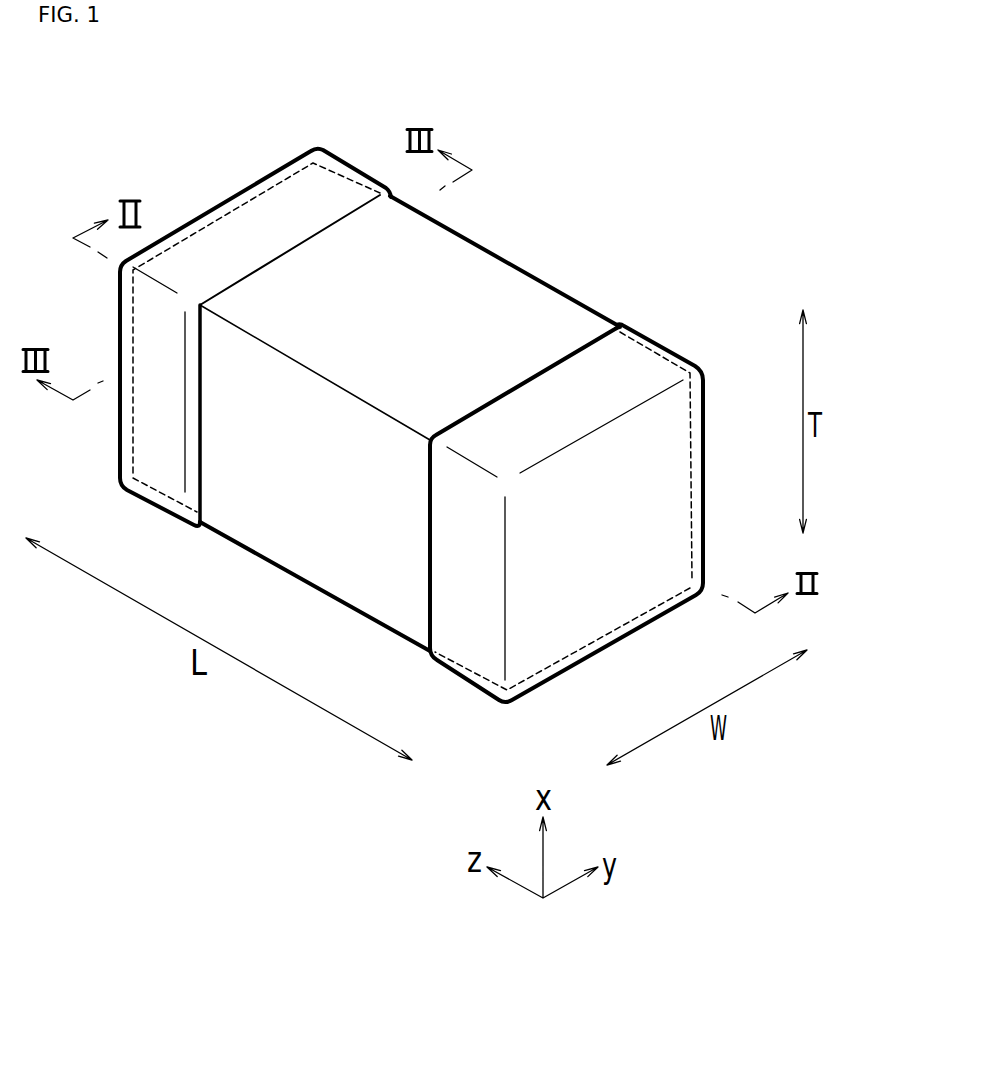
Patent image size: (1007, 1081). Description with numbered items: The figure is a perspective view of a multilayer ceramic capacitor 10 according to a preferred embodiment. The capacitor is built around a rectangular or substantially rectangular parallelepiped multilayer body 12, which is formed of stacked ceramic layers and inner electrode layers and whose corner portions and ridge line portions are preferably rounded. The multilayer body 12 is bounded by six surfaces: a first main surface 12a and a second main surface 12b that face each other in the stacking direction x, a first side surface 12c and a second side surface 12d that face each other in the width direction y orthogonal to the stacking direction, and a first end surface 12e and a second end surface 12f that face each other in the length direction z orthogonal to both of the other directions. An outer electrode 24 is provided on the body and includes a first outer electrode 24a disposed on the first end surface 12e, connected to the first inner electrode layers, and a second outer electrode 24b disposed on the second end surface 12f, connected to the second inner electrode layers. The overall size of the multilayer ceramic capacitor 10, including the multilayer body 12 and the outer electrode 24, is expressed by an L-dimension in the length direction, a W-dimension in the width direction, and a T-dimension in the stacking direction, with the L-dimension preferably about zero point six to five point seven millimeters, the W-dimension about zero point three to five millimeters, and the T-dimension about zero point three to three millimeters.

The multilayer ceramic capacitor 10 is at (78, 119).
The multilayer body 12 is at (582, 308).
The first main surface 12a is at (528, 312).
The second main surface 12b is at (297, 538).
The first side surface 12c is at (357, 560).
The second side surface 12d is at (482, 287).
The first end surface 12e is at (270, 205).
The second end surface 12f is at (660, 443).
The outer electrode 24 is at (258, 820).
The first outer electrode 24a is at (337, 155).
The second outer electrode 24b is at (662, 343).